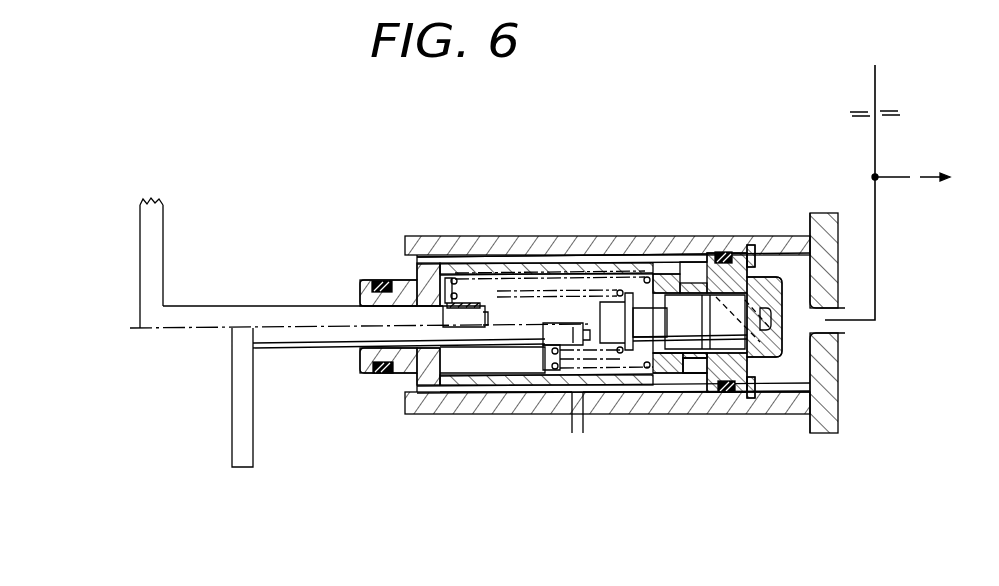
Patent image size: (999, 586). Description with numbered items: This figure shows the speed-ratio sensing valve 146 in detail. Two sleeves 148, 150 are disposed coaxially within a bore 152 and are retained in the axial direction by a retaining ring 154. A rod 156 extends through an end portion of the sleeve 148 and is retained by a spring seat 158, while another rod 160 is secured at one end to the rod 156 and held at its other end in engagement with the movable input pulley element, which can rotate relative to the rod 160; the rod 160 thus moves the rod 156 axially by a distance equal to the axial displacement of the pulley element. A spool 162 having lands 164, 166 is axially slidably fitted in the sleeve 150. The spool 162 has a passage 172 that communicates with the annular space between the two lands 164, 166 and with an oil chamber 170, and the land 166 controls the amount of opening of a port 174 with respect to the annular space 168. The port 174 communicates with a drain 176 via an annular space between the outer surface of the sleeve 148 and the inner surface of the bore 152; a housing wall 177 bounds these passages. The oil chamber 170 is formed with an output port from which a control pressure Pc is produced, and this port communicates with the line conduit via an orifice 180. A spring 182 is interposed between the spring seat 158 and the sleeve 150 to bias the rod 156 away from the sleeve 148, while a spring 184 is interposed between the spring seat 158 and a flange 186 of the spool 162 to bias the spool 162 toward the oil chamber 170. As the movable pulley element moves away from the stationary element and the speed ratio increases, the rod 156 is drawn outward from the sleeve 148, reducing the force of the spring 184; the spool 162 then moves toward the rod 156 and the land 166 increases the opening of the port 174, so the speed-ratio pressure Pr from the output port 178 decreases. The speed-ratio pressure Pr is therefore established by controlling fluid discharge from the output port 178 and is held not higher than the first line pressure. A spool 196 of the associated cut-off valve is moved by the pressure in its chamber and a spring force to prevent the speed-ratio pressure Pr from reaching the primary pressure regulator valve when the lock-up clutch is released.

The speed-ratio sensing valve 146 is at (640, 210).
The sleeve 148 is at (516, 266).
The sleeve 150 is at (749, 252).
The bore 152 is at (572, 266).
The retaining ring 154 is at (773, 395).
The rod 156 is at (303, 333).
The spring seat 158 is at (417, 278).
The rod 160 is at (153, 238).
The spool 162 is at (648, 325).
The land 164 is at (783, 303).
The land 166 is at (680, 302).
The annular space 168 is at (710, 374).
The oil chamber 170 is at (802, 372).
The passage 172 is at (745, 402).
The port 174 is at (693, 374).
The drain 176 is at (577, 428).
The housing wall 177 is at (495, 386).
The output port 178 is at (830, 327).
The orifice 180 is at (866, 110).
The spring 182 is at (447, 277).
The spring 184 is at (458, 292).
The flange 186 is at (624, 354).
The spool 196 is at (932, 178).